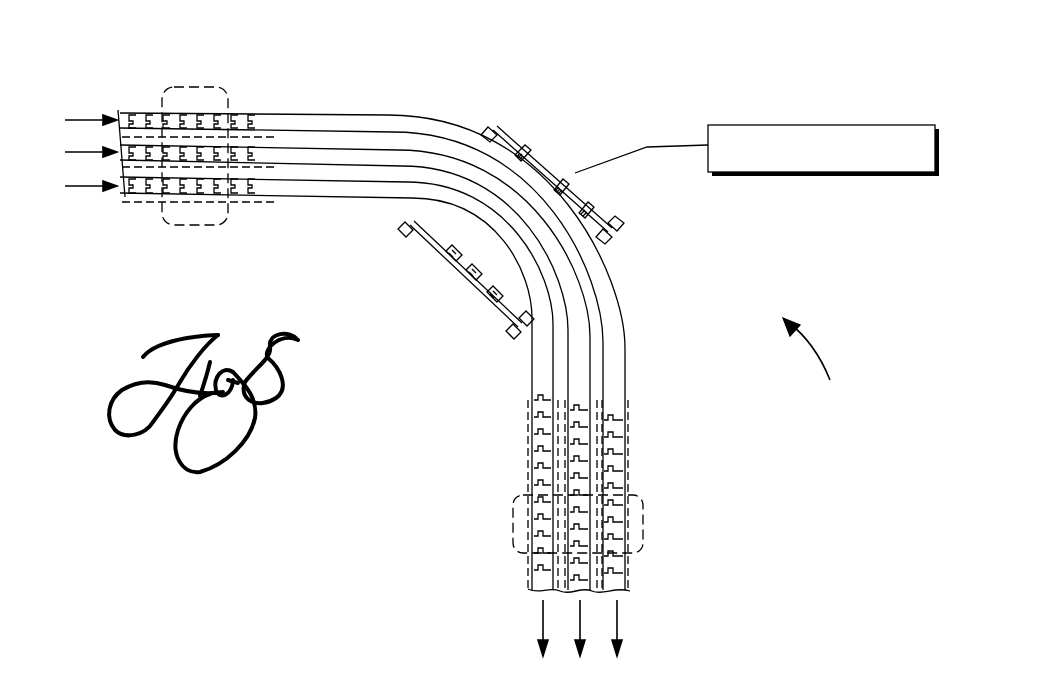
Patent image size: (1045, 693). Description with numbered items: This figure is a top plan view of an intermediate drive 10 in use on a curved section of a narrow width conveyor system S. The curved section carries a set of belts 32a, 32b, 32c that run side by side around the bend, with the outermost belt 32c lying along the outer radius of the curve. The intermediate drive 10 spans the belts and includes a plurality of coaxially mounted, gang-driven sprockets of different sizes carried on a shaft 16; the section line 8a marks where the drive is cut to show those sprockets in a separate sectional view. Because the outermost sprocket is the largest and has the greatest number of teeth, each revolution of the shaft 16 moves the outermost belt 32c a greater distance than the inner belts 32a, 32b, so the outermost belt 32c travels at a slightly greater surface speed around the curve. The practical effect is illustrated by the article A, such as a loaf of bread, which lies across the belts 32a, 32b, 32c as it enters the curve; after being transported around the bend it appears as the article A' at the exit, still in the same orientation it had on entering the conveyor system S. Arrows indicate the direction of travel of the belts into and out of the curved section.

The intermediate drive 10 is at (545, 102).
The section line / tie bar assembly 8a is at (497, 190).
The shaft 16 is at (459, 306).
The belt 32a is at (535, 456).
The belt 32b is at (590, 405).
The outermost belt 32c is at (620, 470).
The article A is at (214, 129).
The article A' is at (617, 549).
The conveyor system S is at (811, 363).